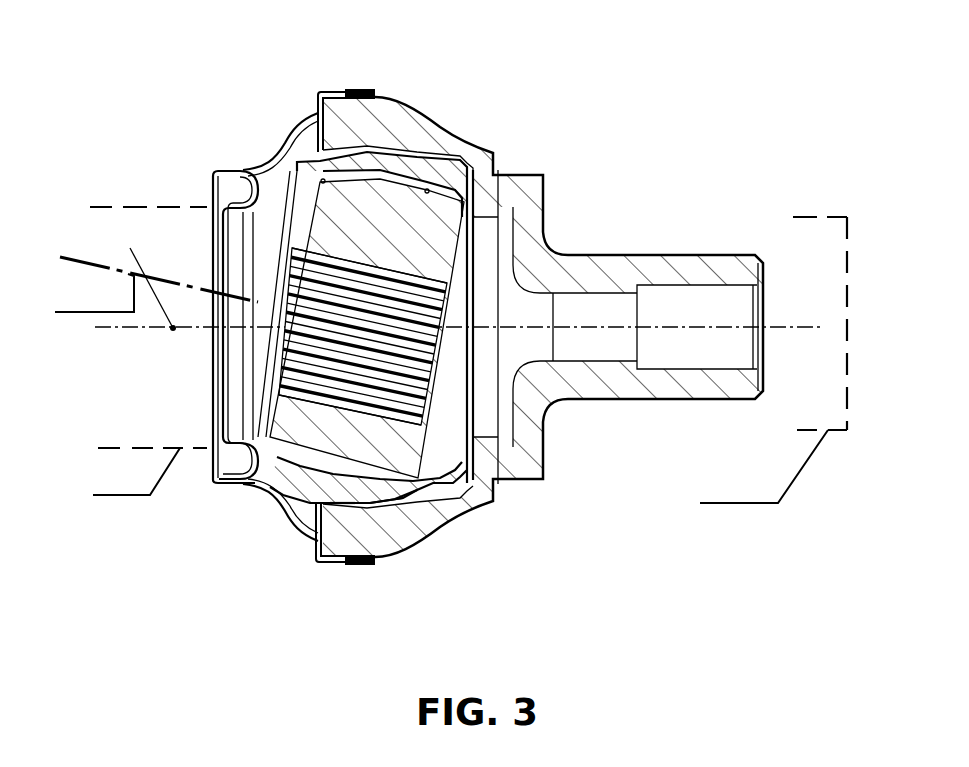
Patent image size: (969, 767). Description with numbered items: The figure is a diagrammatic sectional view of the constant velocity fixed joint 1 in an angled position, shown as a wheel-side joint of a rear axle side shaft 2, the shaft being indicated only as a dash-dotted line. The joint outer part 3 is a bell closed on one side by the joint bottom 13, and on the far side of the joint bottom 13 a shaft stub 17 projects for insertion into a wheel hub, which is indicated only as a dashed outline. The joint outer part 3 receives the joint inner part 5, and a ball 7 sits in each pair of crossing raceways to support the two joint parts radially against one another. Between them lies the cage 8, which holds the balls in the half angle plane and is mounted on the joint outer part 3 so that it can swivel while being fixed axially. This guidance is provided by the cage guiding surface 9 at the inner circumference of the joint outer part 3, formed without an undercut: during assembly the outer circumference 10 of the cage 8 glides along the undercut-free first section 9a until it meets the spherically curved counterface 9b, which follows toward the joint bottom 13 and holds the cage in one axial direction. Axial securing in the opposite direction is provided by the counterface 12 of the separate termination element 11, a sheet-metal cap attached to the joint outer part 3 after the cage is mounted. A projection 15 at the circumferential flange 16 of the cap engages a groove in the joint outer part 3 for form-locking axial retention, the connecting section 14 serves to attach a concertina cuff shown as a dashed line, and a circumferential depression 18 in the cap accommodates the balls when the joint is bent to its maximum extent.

The constant velocity fixed joint 1 is at (158, 98).
The rear axle side shaft 2 is at (100, 265).
The joint outer part 3 is at (518, 197).
The joint inner part 5 is at (300, 394).
The ball 7 is at (302, 494).
The cage 8 is at (273, 472).
The cage guiding surface 9 is at (370, 503).
The first section 9a is at (342, 503).
The counterface 9b is at (407, 500).
The outer circumference of the cage 10 is at (280, 489).
The termination element 11 is at (243, 170).
The counterface 12 is at (268, 485).
The joint bottom 13 is at (514, 422).
The connecting section 14 is at (230, 207).
The projection 15 is at (352, 93).
The circumferential flange 16 is at (325, 91).
The shaft stub 17 is at (703, 268).
The circumferential depression 18 is at (290, 137).